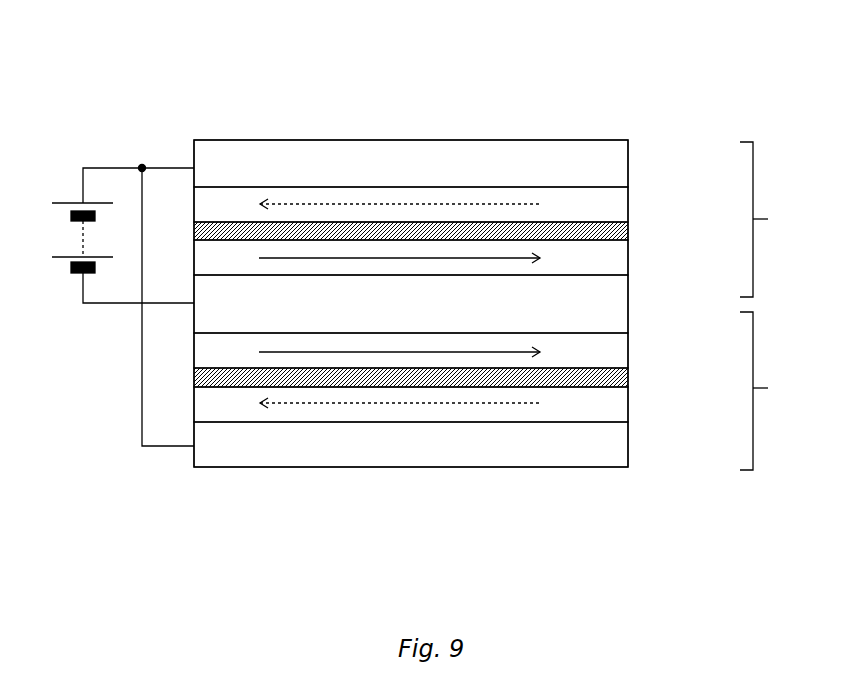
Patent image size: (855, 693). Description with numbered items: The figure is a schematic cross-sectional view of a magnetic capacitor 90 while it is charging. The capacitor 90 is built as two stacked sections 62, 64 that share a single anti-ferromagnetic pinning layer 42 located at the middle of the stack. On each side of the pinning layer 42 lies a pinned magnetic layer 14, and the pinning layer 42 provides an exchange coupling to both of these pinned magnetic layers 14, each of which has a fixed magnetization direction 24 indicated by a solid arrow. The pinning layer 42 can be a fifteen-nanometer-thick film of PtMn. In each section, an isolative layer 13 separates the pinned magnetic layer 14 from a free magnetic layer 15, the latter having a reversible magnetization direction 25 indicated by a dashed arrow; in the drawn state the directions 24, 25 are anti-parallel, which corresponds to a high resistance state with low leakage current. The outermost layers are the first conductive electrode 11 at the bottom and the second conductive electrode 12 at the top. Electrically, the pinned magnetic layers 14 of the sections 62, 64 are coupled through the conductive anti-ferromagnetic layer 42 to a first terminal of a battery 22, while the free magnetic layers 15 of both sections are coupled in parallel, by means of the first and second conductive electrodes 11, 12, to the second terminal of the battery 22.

The magnetic capacitor 90 is at (463, 243).
The first conductive electrode 11 is at (453, 444).
The second conductive electrode 12 is at (453, 163).
The isolative layer 13 is at (453, 300).
The pinned magnetic layer 14 is at (453, 304).
The free magnetic layer 15 is at (453, 301).
The anti-ferromagnetic pinning layer 42 is at (453, 304).
The battery 22 is at (112, 285).
The fixed magnetization direction 24 is at (327, 352).
The reversible magnetization direction 25 is at (447, 403).
The section 62 is at (776, 391).
The section 64 is at (779, 219).